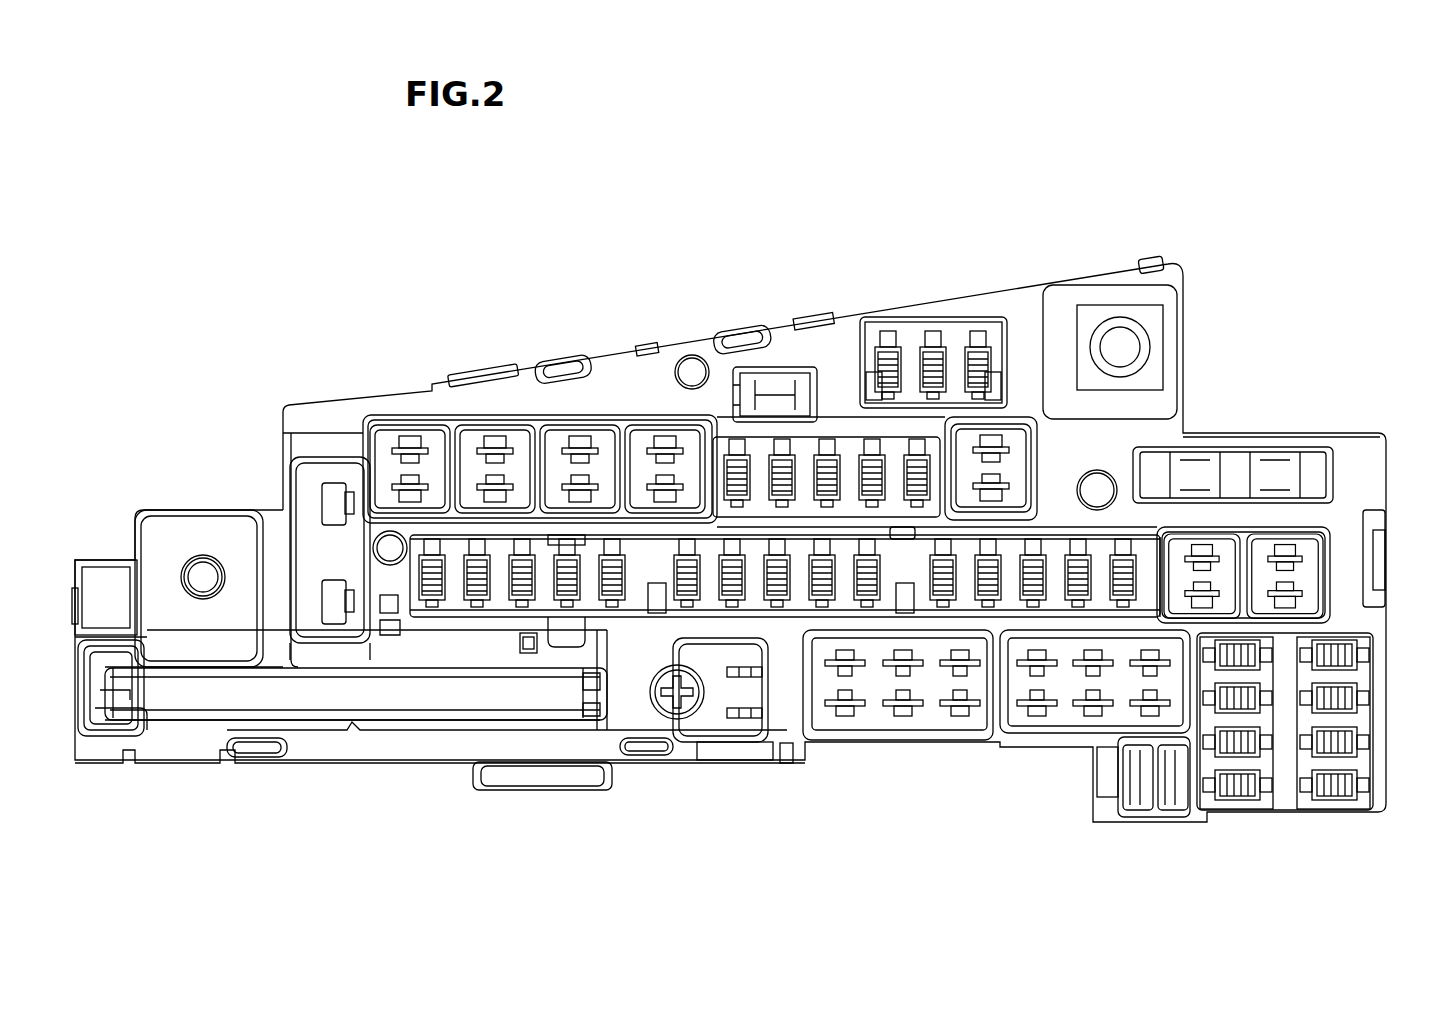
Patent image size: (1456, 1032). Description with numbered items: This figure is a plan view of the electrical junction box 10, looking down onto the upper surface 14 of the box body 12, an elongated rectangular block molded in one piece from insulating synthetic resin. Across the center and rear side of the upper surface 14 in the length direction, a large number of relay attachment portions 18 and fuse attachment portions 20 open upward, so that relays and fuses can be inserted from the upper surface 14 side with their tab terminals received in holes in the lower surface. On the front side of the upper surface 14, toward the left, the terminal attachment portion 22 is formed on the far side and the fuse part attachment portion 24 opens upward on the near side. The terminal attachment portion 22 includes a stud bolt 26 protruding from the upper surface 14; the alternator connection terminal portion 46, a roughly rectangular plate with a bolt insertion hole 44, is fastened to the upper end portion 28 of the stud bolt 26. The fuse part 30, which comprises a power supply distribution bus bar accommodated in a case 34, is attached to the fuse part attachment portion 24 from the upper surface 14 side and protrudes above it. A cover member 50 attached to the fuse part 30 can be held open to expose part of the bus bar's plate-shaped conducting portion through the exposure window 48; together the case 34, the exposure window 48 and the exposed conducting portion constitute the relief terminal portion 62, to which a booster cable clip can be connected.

The electrical junction box 10 is at (770, 148).
The box body 12 is at (823, 223).
The upper surface 14 is at (643, 390).
The relay attachment portion 18 is at (465, 467).
The fuse attachment portion 20 is at (975, 355).
The terminal attachment portion 22 is at (190, 478).
The fuse part attachment portion 24 is at (100, 712).
The stud bolt 26 is at (200, 548).
The upper end portion 28 is at (205, 580).
The fuse part 30 is at (395, 722).
The case 34 is at (332, 697).
The bolt insertion hole 44 is at (190, 587).
The alternator connection terminal portion 46 is at (175, 545).
The exposure window 48 is at (597, 680).
The cover member 50 is at (710, 720).
The relief terminal portion 62 is at (655, 735).